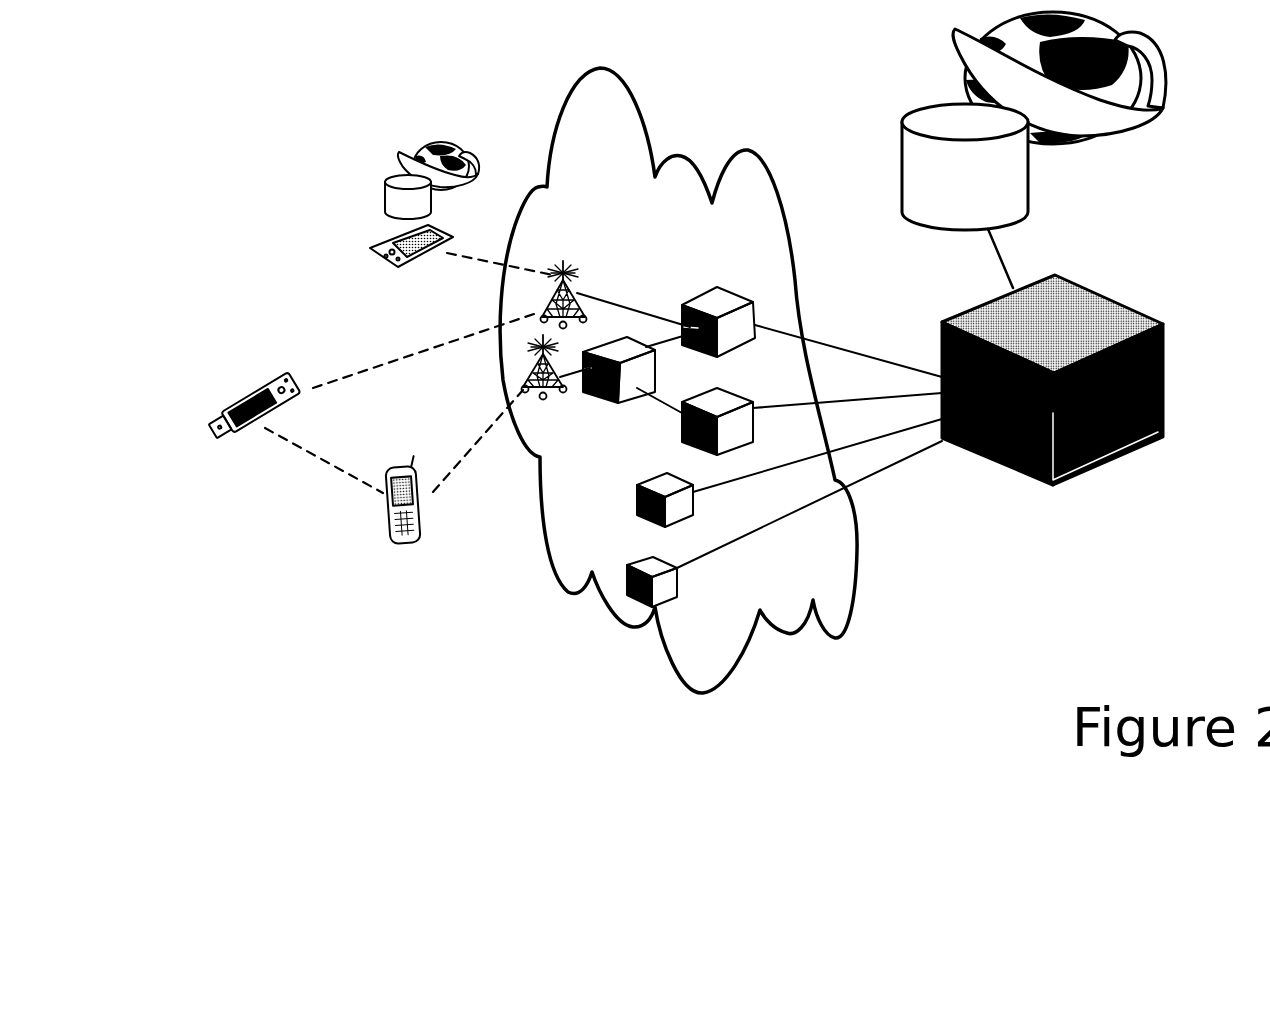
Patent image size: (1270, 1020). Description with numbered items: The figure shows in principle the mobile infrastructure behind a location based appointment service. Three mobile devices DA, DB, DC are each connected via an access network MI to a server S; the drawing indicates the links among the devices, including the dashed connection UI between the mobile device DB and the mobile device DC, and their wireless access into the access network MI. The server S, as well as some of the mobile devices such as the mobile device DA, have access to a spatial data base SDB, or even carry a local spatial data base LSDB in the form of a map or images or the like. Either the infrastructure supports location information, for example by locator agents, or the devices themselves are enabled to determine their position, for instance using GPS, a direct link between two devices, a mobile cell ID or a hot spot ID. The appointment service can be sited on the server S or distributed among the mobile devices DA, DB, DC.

The access network MI is at (678, 400).
The user interface link UI is at (314, 479).
The mobile device DB is at (222, 380).
The mobile device DC is at (381, 533).
The mobile device DA is at (372, 219).
The local spatial data base LSDB is at (428, 154).
The spatial data base SDB is at (1042, 121).
The server S is at (1077, 373).